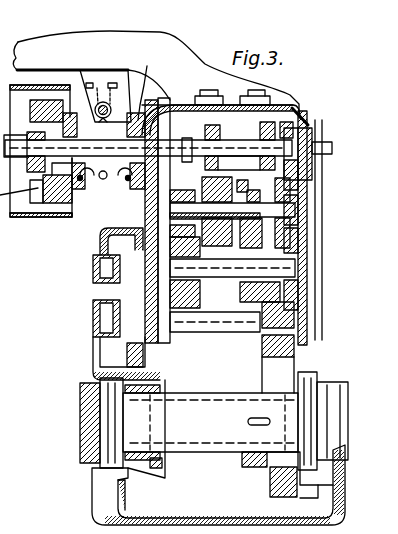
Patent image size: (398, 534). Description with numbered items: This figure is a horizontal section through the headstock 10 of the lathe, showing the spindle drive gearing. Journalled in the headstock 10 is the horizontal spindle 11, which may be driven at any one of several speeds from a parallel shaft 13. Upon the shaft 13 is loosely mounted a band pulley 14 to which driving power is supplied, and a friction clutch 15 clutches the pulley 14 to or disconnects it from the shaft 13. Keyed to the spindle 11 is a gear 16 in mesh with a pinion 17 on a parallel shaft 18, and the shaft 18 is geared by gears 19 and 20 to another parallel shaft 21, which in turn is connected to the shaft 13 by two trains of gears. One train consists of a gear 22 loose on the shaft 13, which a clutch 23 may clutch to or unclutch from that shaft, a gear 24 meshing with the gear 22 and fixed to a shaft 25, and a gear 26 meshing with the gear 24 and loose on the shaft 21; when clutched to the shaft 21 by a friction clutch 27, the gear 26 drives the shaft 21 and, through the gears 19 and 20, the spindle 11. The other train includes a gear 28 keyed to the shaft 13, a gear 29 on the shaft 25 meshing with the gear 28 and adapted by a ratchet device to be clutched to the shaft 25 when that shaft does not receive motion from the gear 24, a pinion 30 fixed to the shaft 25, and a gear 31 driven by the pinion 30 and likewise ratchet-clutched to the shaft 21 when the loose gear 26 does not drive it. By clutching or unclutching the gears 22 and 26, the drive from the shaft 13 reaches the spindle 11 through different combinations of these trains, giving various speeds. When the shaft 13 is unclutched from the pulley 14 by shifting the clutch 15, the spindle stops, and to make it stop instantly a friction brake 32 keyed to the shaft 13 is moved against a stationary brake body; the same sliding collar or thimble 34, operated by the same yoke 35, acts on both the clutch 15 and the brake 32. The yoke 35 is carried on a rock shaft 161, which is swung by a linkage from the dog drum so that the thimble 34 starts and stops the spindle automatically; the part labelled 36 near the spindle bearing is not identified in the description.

The headstock 10 is at (218, 452).
The horizontal spindle 11 is at (190, 398).
The parallel shaft 13 is at (149, 140).
The band pulley 14 is at (53, 100).
The friction clutch 15 is at (74, 192).
The gear 16 is at (270, 493).
The pinion 17 is at (262, 338).
The parallel shaft 18 is at (212, 320).
The gear 19 is at (110, 292).
The gear 20 is at (103, 238).
The parallel shaft 21 is at (285, 266).
The gear 22 is at (291, 116).
The clutch 23 is at (253, 120).
The gear 24 is at (312, 186).
The shaft 25 is at (287, 208).
The gear 26 is at (310, 286).
The friction clutch 27 is at (306, 237).
The gear 28 is at (212, 120).
The gear 29 is at (246, 204).
The pinion 30 is at (160, 195).
The gear 31 is at (196, 272).
The friction brake 32 is at (156, 75).
The sliding collar or thimble 34 is at (122, 182).
The yoke 35 is at (87, 182).
The nut 36 is at (160, 466).
The rock shaft 161 is at (98, 68).